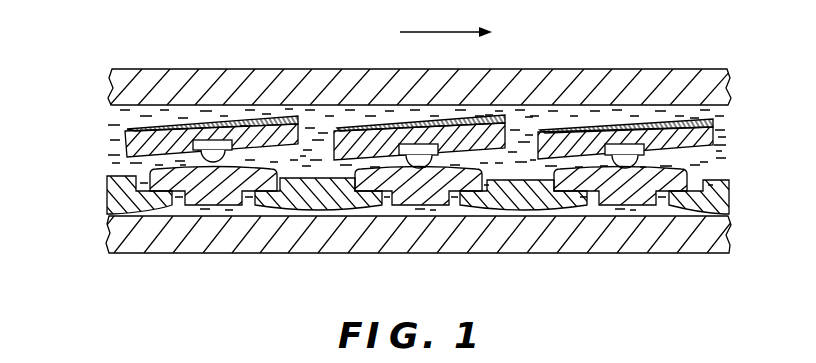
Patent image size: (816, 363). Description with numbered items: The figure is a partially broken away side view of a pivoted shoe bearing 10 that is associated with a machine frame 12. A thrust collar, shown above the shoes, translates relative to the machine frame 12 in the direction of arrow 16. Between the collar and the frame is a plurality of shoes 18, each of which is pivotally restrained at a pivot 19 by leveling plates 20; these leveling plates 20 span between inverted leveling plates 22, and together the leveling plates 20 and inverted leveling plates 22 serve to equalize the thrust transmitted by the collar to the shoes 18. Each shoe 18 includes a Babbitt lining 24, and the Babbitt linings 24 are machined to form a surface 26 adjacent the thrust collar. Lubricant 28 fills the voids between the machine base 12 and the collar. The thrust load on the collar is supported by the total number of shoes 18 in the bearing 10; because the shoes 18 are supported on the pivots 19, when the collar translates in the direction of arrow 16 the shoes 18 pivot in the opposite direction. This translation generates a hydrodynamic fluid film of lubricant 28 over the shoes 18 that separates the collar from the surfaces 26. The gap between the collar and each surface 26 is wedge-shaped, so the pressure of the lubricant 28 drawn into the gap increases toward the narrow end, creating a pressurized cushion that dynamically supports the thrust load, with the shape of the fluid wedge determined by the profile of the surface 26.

The bearing 10 is at (93, 73).
The machine frame 12 is at (160, 238).
The arrow 16 is at (442, 23).
The shoe 18 is at (160, 136).
The pivot 19 is at (215, 152).
The leveling plate 20 is at (220, 193).
The inverted leveling plate 22 is at (120, 197).
The Babbitt lining 24 is at (207, 122).
The surface 26 is at (133, 128).
The lubricant 28 is at (283, 213).